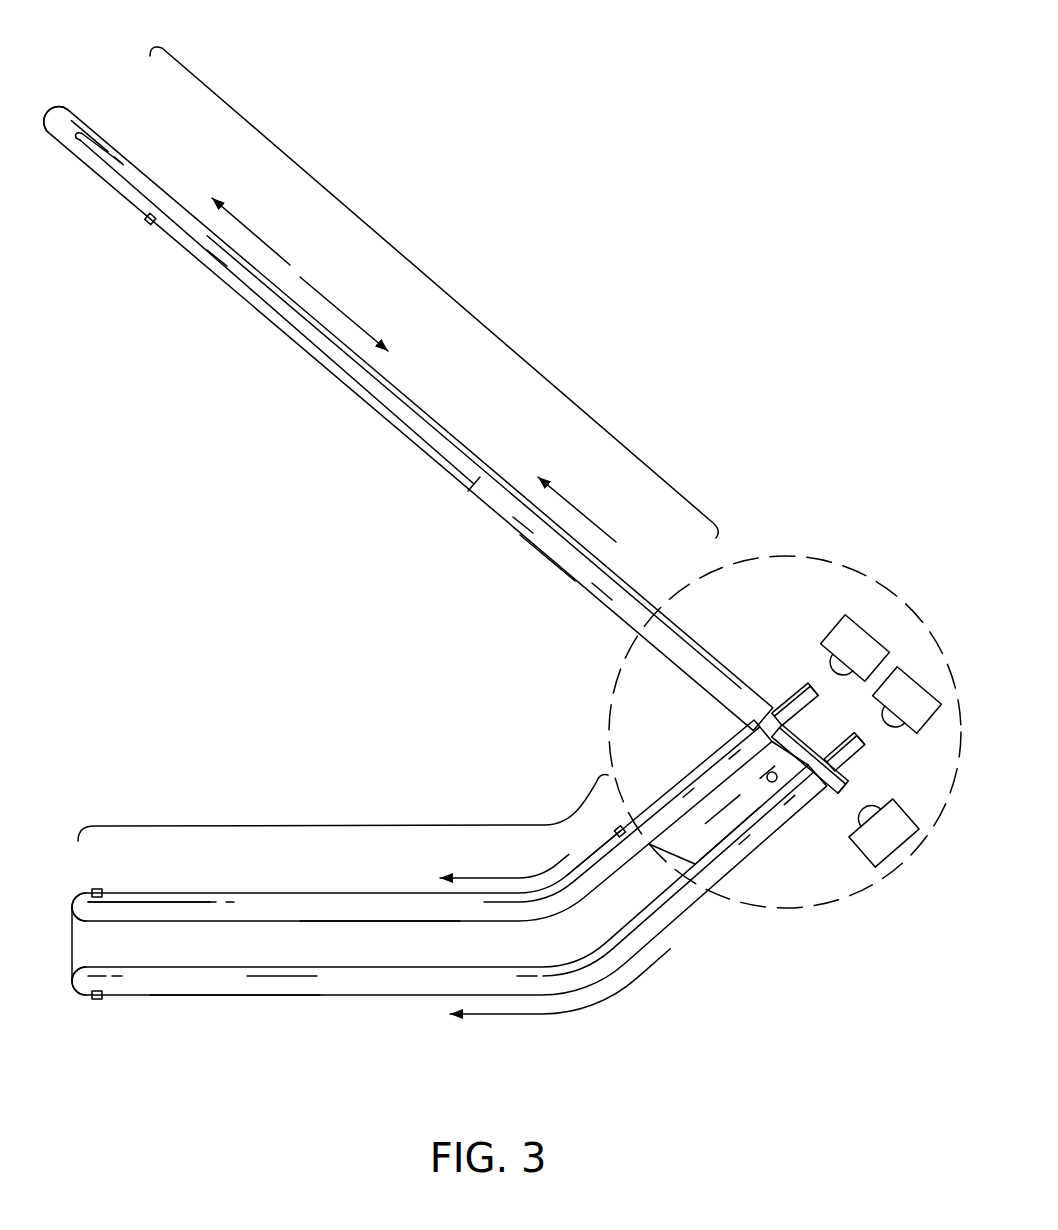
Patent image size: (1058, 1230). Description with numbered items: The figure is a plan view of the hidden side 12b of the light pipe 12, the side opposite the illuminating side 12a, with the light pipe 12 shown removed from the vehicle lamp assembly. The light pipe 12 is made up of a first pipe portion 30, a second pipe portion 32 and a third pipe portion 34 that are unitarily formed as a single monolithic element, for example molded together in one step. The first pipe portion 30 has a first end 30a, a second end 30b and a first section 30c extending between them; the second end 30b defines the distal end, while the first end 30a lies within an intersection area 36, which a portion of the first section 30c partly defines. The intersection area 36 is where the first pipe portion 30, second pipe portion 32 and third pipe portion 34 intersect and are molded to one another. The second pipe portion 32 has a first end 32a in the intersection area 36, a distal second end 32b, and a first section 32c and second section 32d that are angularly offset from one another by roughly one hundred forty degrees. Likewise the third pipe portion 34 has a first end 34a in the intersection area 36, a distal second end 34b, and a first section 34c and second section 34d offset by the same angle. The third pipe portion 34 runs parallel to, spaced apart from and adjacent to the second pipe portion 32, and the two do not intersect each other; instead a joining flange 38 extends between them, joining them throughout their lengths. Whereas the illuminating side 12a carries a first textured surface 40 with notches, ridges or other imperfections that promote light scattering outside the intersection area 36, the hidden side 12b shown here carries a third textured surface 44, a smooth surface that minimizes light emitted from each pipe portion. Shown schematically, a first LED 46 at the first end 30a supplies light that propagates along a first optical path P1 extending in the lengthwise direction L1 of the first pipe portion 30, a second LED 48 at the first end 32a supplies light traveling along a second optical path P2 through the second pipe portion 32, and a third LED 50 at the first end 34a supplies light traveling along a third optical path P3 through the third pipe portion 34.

The light pipe 12 is at (328, 415).
The illuminating side 12a is at (548, 548).
The hidden side 12b is at (380, 911).
The first pipe portion 30 is at (457, 433).
The first end 30a is at (850, 792).
The second end 30b is at (86, 124).
The first section 30c is at (476, 490).
The second pipe portion 32 is at (242, 890).
The first end 32a is at (808, 686).
The second end 32b is at (80, 905).
The first section 32c is at (175, 901).
The second section 32d is at (600, 845).
The third pipe portion 34 is at (320, 998).
The first end 34a is at (866, 746).
The second end 34b is at (74, 987).
The first section 34c is at (233, 993).
The second section 34d is at (708, 897).
The intersection area 36 is at (614, 690).
The joining flange 38 is at (283, 938).
The first textured surface 40 is at (447, 296).
The third textured surface 44 is at (400, 422).
The first LED 46 is at (828, 627).
The second LED 48 is at (915, 670).
The third LED 50 is at (858, 850).
The lengthwise direction L1 is at (302, 250).
The first optical path P1 is at (616, 542).
The second optical path P2 is at (482, 875).
The third optical path P3 is at (577, 1016).